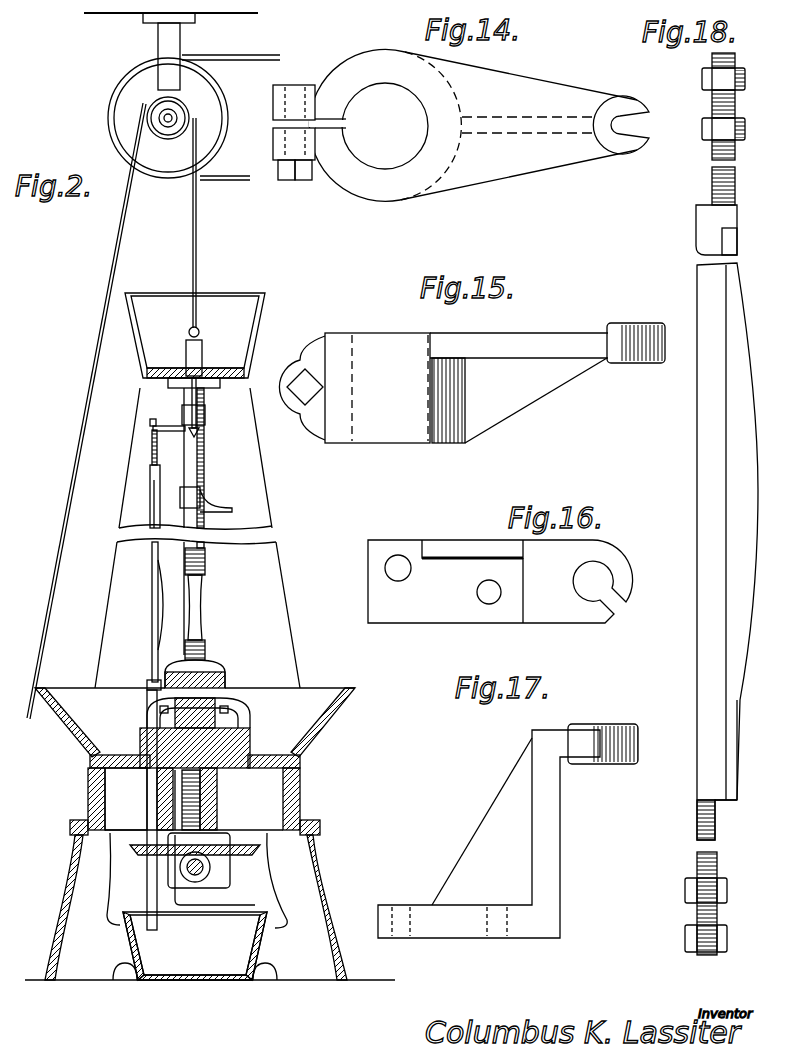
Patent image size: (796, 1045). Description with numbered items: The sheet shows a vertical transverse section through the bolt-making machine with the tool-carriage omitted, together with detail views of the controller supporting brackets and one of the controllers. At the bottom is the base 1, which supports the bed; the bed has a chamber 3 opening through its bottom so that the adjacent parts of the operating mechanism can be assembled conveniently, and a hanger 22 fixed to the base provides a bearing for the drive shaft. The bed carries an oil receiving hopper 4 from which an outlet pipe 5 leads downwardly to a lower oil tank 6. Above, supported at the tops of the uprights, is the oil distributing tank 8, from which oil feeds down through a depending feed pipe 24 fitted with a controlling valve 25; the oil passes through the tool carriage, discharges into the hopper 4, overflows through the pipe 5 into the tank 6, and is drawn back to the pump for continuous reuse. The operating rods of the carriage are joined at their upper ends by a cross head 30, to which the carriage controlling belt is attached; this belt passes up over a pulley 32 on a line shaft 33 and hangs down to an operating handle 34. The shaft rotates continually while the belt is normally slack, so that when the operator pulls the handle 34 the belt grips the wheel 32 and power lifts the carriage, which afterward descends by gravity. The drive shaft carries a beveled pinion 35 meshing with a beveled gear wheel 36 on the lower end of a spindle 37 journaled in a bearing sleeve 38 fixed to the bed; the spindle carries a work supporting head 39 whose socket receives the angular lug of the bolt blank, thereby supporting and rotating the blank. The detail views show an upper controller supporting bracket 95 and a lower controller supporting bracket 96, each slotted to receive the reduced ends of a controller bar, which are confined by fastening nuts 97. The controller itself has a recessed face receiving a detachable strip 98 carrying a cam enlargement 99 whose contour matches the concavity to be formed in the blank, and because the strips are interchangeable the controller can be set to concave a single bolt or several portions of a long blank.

In FIG. 2, the base 1 is at (315, 853).
In FIG. 2, the chamber 3 is at (303, 782).
In FIG. 2, the oil receiving hopper 4 is at (307, 712).
In FIG. 2, the outlet pipe 5 is at (146, 798).
In FIG. 2, the lower oil tank 6 is at (196, 882).
In FIG. 2, the oil distributing tank 8 is at (240, 300).
In FIG. 2, the hanger 22 is at (222, 887).
In FIG. 2, the feed pipe 24 is at (196, 410).
In FIG. 2, the controlling valve 25 is at (202, 442).
In FIG. 2, the cross head 30 is at (200, 332).
In FIG. 2, the pulley 32 is at (110, 131).
In FIG. 2, the line shaft 33 is at (176, 114).
In FIG. 2, the operating handle 34 is at (42, 630).
In FIG. 2, the beveled pinion 35 is at (195, 946).
In FIG. 2, the beveled gear wheel 36 is at (135, 850).
In FIG. 2, the spindle 37 is at (205, 795).
In FIG. 2, the bearing sleeve 38 is at (230, 733).
In FIG. 2, the work supporting head 39 is at (205, 695).
In FIG. 2, the upper controller supporting bracket 95 is at (180, 424).
In FIG. 14, the upper controller supporting bracket 95 is at (484, 174).
In FIG. 16, the lower controller supporting bracket 96 is at (453, 545).
In FIG. 17, the lower controller supporting bracket 96 is at (487, 818).
In FIG. 2, the fastening nut 97 is at (152, 432).
In FIG. 18, the fastening nut 97 is at (706, 130).
In FIG. 2, the strip 98 is at (157, 495).
In FIG. 18, the strip 98 is at (727, 292).
In FIG. 2, the cam enlargement 99 is at (150, 608).
In FIG. 18, the cam enlargement 99 is at (745, 488).